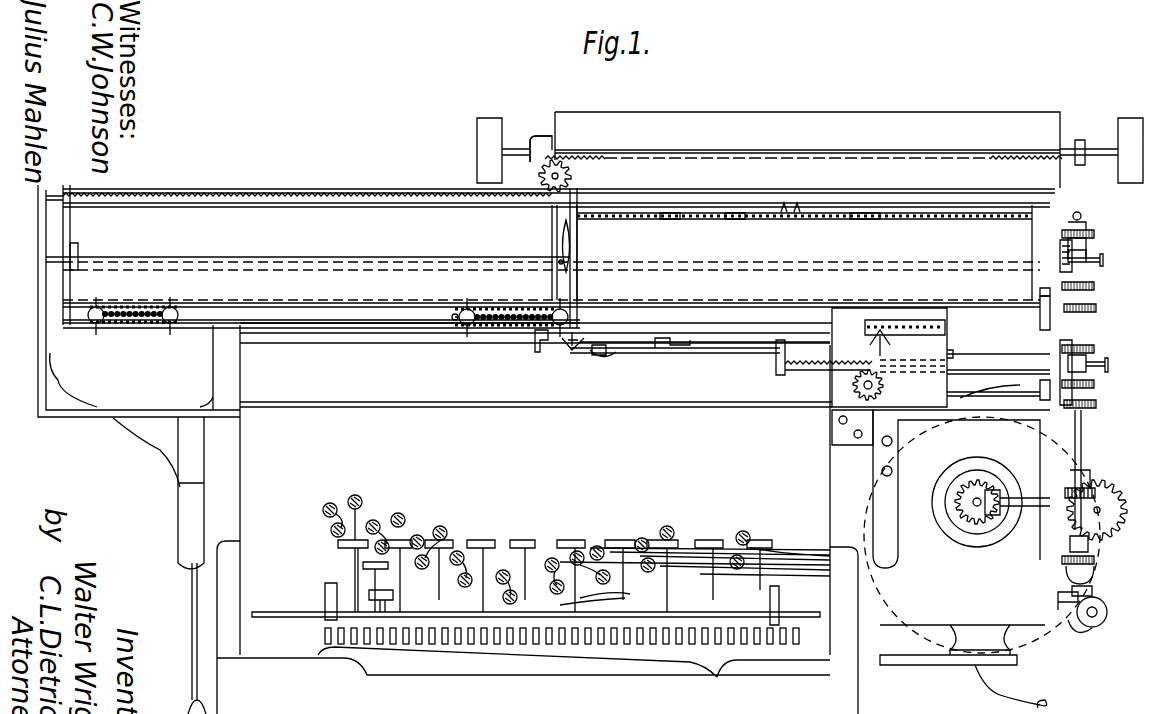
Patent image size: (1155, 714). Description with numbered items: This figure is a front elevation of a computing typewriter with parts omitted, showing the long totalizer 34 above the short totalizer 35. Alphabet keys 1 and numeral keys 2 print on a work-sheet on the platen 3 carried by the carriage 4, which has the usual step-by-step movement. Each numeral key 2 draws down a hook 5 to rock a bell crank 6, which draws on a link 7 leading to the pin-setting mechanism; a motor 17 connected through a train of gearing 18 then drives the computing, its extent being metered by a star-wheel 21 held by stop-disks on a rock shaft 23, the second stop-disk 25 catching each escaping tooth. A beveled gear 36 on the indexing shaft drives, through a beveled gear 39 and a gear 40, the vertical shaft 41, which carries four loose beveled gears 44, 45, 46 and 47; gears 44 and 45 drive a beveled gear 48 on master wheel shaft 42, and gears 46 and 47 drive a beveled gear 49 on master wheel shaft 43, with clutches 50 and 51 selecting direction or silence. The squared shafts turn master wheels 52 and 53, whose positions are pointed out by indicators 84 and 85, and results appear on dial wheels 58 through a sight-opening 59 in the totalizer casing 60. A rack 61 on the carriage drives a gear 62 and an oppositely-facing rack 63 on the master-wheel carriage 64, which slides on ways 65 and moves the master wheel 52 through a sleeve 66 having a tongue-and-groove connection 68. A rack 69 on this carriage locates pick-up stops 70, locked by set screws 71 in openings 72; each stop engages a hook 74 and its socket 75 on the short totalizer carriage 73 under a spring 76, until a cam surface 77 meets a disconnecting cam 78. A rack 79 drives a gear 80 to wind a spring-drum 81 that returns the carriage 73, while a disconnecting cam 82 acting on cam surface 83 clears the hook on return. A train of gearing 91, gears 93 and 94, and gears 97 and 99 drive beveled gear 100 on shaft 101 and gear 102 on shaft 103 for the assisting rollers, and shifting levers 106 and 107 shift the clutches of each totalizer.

The alphabet keys 1 is at (369, 594).
The numeral keys 2 is at (605, 542).
The platen 3 is at (855, 112).
The carriage 4 is at (1082, 142).
The hook 5 is at (625, 598).
The bell crank 6 is at (545, 545).
The link 7 is at (505, 540).
The motor 17 is at (920, 600).
The train of gearing 18 is at (1060, 472).
The star-wheel 21 is at (1093, 591).
The rock shaft 23 is at (1082, 626).
The second stop-disk 25 is at (1098, 624).
The long totalizer 34 is at (925, 215).
The short totalizer 35 is at (945, 345).
The beveled gear 36 is at (1060, 597).
The beveled gear 39 is at (1095, 566).
The gear 40 is at (1090, 545).
The vertical shaft 41 is at (1082, 440).
The master wheel shaft 42 is at (770, 262).
The master wheel shaft 43 is at (1000, 370).
The beveled gear 44 is at (1088, 248).
The beveled gear 45 is at (1094, 289).
The beveled gear 46 is at (1090, 348).
The beveled gear 47 is at (1096, 387).
The beveled gear 48 is at (1060, 262).
The beveled gear 49 is at (1060, 360).
The clutch 50 is at (1092, 258).
The clutch 51 is at (1092, 365).
The master wheel 52 is at (553, 262).
The master wheel 53 is at (862, 348).
The dial wheels 58 is at (735, 220).
The sight-opening 59 is at (668, 220).
The totalizer casing 60 is at (865, 231).
The rack 61 is at (602, 152).
The gear 62 is at (573, 176).
The rack 63 is at (538, 192).
The master-wheel carriage 64 is at (70, 232).
The ways 65 is at (44, 200).
The sleeve 66 is at (345, 258).
The circular tongue-and-groove connection 68 is at (80, 254).
The rack 69 is at (343, 320).
The pick-up stops 70 is at (470, 309).
The set screws 71 is at (457, 326).
The openings 72 is at (488, 326).
The carriage 73 is at (776, 366).
The hook 74 is at (572, 342).
The socket 75 is at (571, 350).
The spring 76 is at (612, 354).
The cam surface 77 is at (582, 340).
The disconnecting cam 78 is at (660, 340).
The rack 79 is at (805, 372).
The gear 80 is at (834, 416).
The spring-drum 81 is at (884, 390).
The disconnecting cam 82 is at (535, 335).
The cam surface 83 is at (555, 311).
The indicator 84 is at (578, 240).
The indicator 85 is at (872, 343).
The train of gearing 91 is at (1026, 478).
The gear 93 is at (1104, 508).
The gear 94 is at (1095, 490).
The gear 97 is at (1097, 309).
The gear 99 is at (1098, 406).
The beveled gear 100 is at (1050, 302).
The shaft 101 is at (1040, 292).
The gear 102 is at (1047, 400).
The shaft 103 is at (1000, 392).
The shifting lever 106 is at (1104, 262).
The shifting lever 107 is at (1109, 367).